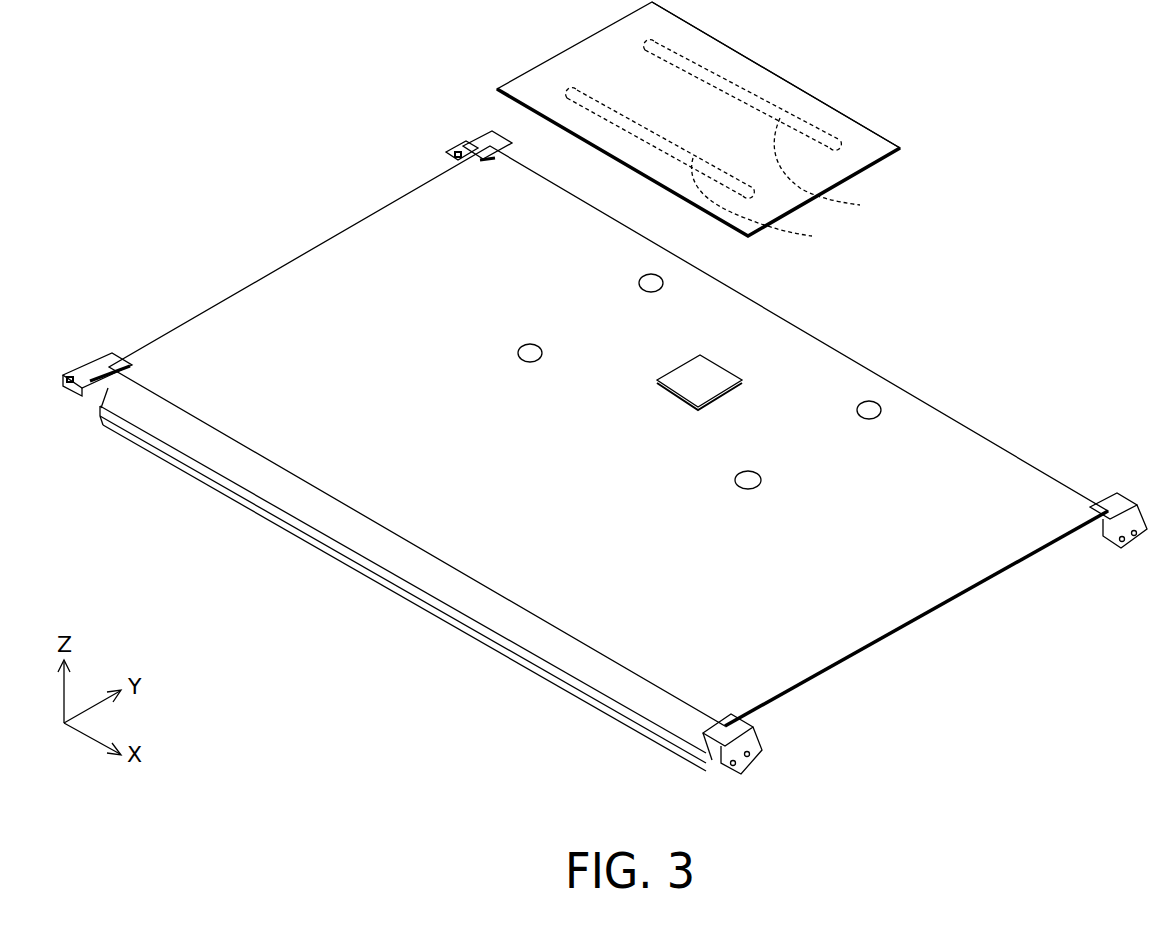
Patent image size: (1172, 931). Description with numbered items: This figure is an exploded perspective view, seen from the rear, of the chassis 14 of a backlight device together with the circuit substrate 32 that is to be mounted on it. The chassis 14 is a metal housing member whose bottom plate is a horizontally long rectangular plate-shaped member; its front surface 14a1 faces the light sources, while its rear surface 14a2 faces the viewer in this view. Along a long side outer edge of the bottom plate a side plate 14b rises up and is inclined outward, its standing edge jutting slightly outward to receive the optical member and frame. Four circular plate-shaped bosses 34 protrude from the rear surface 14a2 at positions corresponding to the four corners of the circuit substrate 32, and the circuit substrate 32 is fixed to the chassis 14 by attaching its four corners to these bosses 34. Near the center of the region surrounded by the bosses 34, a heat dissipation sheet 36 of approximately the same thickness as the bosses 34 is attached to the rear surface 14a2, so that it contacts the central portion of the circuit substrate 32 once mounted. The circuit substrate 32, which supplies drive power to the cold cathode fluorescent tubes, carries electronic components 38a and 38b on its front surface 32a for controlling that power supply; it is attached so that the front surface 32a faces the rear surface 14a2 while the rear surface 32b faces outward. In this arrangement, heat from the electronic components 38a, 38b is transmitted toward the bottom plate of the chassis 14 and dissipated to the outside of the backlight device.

The chassis 14 is at (938, 603).
The front surface of the bottom plate 14a1 is at (833, 613).
The rear surface of the bottom plate 14a2 is at (997, 542).
The side plate 14b is at (627, 687).
The circuit substrate 32 is at (563, 50).
The front surface of the circuit substrate 32a is at (857, 152).
The rear surface of the circuit substrate 32b is at (785, 92).
The boss 34 is at (533, 350).
The heat dissipation sheet 36 is at (707, 378).
The electronic component 38a is at (775, 204).
The electronic component 38b is at (840, 167).